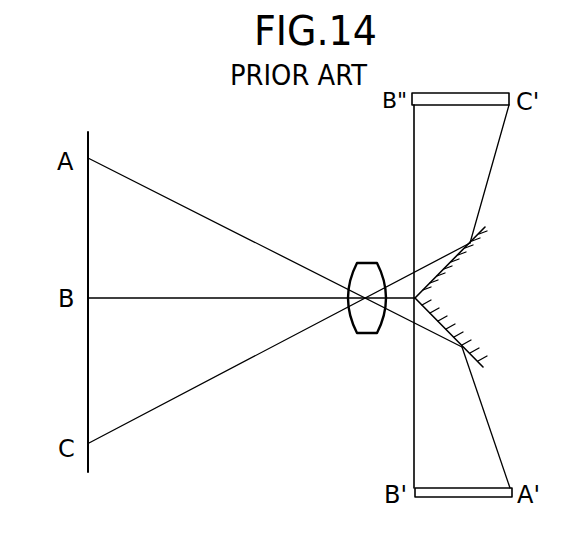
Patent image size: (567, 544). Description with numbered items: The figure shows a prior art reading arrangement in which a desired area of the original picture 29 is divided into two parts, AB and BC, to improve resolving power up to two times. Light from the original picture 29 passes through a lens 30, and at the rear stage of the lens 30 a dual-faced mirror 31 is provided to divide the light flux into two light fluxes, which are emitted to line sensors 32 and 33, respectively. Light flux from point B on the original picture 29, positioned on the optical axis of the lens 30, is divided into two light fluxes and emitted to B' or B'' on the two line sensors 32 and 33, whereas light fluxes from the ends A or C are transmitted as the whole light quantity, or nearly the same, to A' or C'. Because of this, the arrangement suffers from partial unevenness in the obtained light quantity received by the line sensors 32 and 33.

The original picture 29 is at (88, 236).
The lens 30 is at (366, 334).
The dual-faced mirror 31 is at (445, 307).
The line sensor 32 is at (454, 498).
The line sensor 33 is at (450, 93).